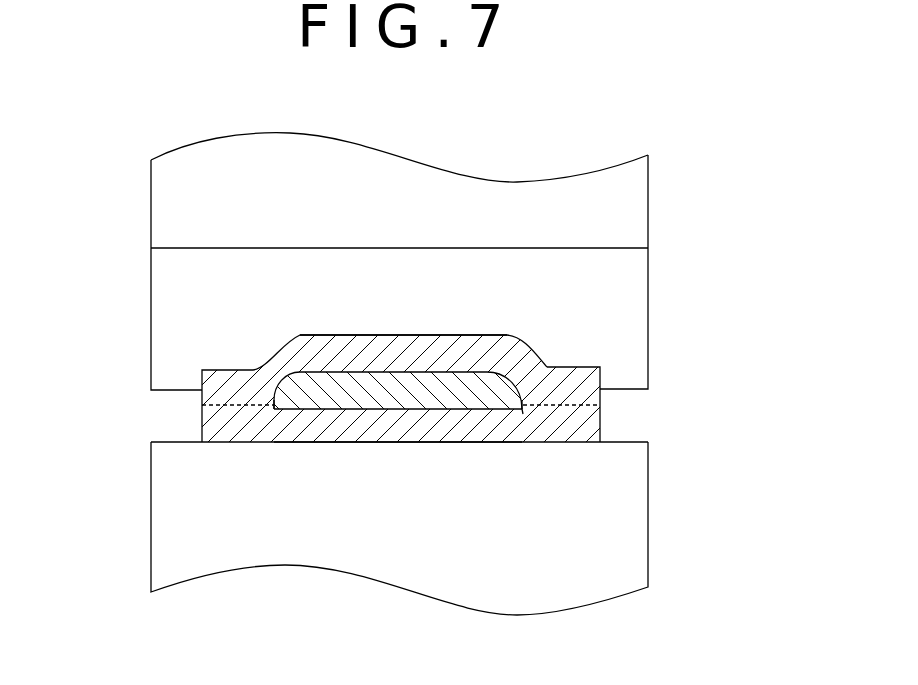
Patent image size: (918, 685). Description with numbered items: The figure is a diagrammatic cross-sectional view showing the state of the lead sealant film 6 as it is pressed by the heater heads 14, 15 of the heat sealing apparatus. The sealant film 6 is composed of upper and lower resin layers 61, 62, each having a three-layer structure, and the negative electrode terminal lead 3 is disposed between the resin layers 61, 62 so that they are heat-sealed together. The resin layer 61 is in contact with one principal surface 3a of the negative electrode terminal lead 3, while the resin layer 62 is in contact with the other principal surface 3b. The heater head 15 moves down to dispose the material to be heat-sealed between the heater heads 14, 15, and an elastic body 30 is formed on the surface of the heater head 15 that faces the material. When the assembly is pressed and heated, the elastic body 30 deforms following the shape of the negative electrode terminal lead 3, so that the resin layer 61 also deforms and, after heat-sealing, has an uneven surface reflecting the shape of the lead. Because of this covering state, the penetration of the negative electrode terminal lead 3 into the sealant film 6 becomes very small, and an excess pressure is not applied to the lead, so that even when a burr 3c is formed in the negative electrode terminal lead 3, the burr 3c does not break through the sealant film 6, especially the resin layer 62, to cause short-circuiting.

The heater head 14 is at (627, 528).
The heater head 15 is at (627, 200).
The elastic body 30 is at (627, 297).
The negative electrode terminal lead 3 is at (523, 360).
The one principal surface 3a is at (349, 352).
The another principal surface 3b is at (370, 443).
The burr 3c is at (262, 412).
The sealant film 6 is at (432, 390).
The resin layer 61 is at (600, 367).
The resin layer 62 is at (600, 428).